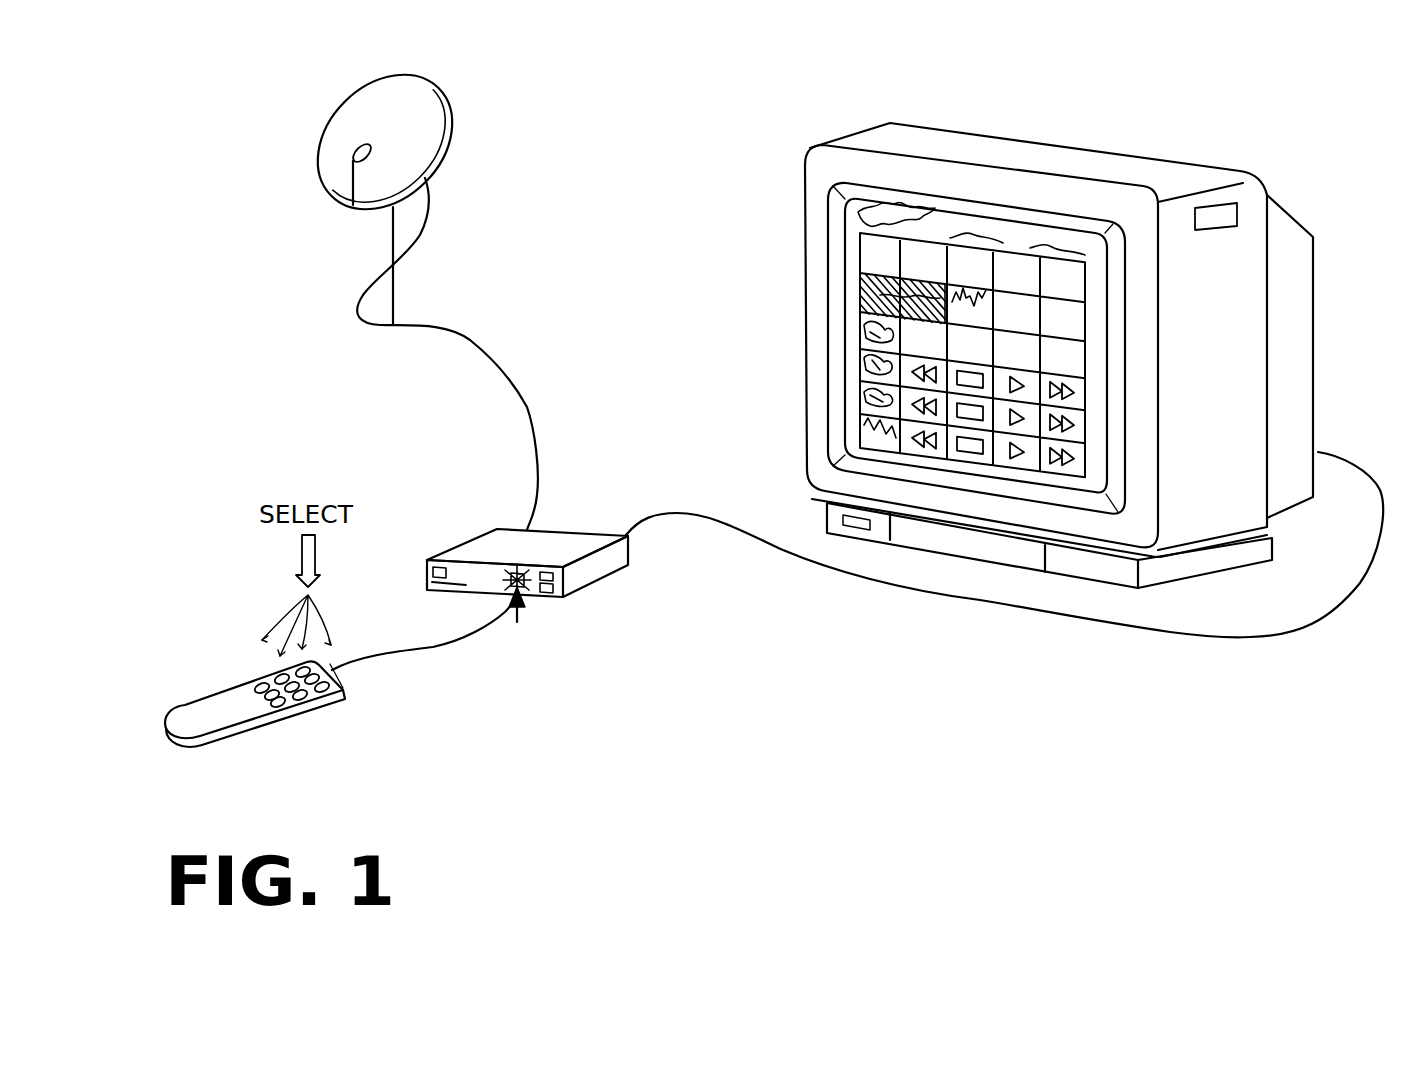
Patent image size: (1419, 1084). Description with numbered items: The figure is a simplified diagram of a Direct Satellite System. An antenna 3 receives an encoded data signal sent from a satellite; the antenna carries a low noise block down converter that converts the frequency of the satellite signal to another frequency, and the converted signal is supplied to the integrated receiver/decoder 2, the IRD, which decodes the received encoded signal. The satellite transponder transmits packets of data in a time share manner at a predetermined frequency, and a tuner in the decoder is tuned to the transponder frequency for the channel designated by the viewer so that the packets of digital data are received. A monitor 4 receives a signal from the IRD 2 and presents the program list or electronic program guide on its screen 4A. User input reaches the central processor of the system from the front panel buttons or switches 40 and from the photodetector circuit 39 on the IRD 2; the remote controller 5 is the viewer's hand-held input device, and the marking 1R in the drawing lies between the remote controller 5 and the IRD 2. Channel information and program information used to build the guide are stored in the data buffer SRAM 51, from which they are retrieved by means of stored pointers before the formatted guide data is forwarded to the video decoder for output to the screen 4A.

The integrated receiver/decoder (IRD) 2 is at (547, 542).
The antenna 3 is at (413, 95).
The monitor 4 is at (1102, 162).
The display screen 4A is at (852, 258).
The remote controller 5 is at (193, 745).
The photodetector circuit 39 is at (550, 594).
The front panel buttons or switches 40 is at (503, 578).
The data buffer SRAM 51 is at (340, 680).
The infrared signal 1R is at (428, 628).